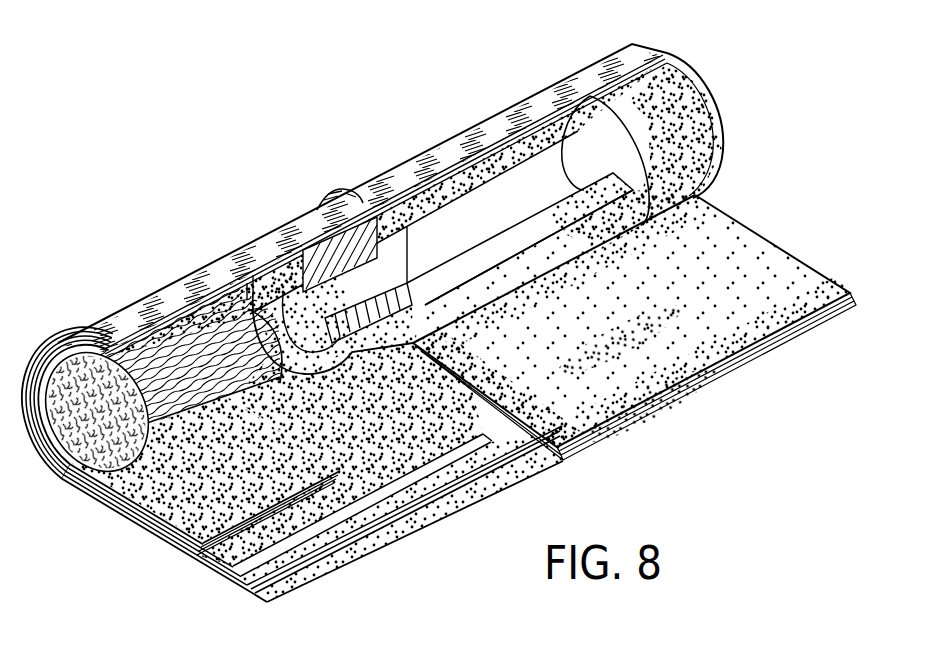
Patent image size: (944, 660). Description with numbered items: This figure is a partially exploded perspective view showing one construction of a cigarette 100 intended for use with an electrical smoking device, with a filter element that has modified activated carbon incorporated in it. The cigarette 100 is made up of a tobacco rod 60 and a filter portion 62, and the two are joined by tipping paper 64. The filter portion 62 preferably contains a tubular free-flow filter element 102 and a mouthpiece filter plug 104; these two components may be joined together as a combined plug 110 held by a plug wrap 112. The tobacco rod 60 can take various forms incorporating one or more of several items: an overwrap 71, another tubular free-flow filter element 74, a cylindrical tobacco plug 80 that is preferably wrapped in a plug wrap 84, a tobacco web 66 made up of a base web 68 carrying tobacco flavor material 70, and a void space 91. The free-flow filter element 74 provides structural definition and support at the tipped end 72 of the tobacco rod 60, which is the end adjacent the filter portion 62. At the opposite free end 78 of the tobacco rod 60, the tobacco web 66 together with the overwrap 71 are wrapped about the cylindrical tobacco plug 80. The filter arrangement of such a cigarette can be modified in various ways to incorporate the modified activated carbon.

The cigarette 100 is at (298, 131).
The tobacco rod 60 is at (183, 282).
The filter portion 62 is at (496, 100).
The tipping paper 64 is at (768, 347).
The tobacco web 66 is at (147, 343).
The base web 68 is at (237, 580).
The tobacco flavor material 70 is at (203, 562).
The overwrap 71 is at (282, 583).
The tipped end 72 is at (390, 215).
The tubular free-flow filter element 74 is at (294, 228).
The free end 78 is at (58, 480).
The cylindrical tobacco plug 80 is at (46, 352).
The plug wrap 84 is at (150, 523).
The void space 91 is at (318, 395).
The tubular free-flow filter element 102 is at (566, 142).
The mouthpiece filter plug 104 is at (672, 74).
The combined plug 110 is at (712, 195).
The plug wrap 112 is at (770, 262).